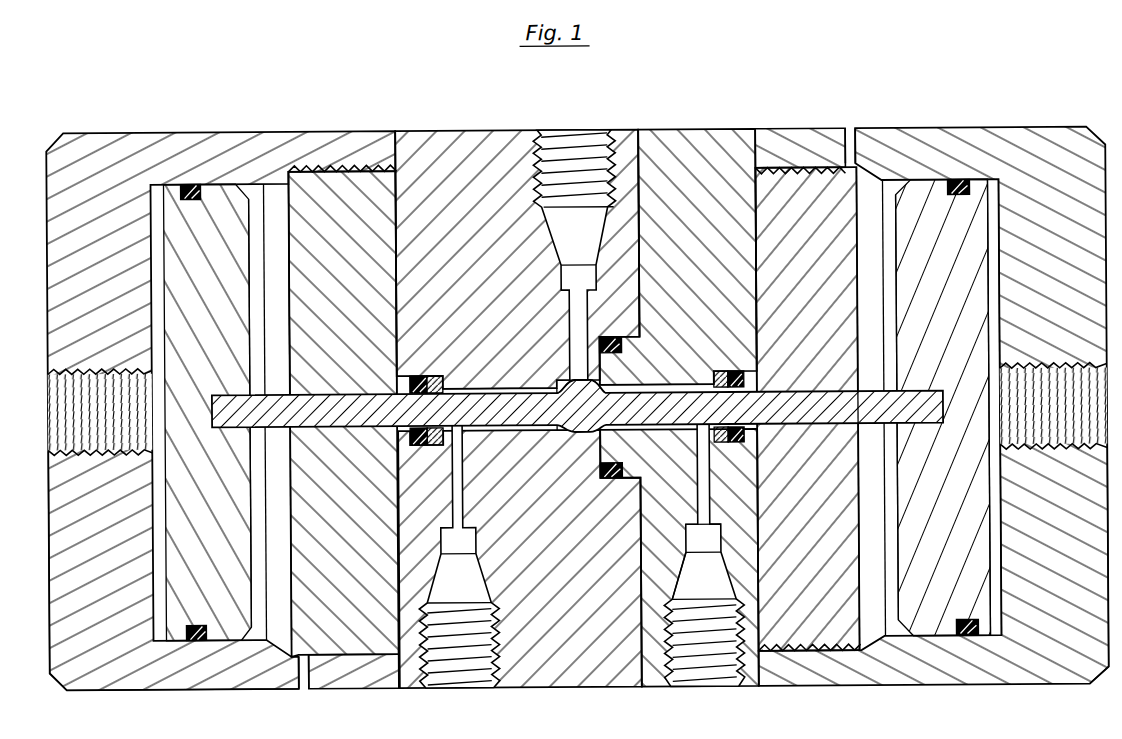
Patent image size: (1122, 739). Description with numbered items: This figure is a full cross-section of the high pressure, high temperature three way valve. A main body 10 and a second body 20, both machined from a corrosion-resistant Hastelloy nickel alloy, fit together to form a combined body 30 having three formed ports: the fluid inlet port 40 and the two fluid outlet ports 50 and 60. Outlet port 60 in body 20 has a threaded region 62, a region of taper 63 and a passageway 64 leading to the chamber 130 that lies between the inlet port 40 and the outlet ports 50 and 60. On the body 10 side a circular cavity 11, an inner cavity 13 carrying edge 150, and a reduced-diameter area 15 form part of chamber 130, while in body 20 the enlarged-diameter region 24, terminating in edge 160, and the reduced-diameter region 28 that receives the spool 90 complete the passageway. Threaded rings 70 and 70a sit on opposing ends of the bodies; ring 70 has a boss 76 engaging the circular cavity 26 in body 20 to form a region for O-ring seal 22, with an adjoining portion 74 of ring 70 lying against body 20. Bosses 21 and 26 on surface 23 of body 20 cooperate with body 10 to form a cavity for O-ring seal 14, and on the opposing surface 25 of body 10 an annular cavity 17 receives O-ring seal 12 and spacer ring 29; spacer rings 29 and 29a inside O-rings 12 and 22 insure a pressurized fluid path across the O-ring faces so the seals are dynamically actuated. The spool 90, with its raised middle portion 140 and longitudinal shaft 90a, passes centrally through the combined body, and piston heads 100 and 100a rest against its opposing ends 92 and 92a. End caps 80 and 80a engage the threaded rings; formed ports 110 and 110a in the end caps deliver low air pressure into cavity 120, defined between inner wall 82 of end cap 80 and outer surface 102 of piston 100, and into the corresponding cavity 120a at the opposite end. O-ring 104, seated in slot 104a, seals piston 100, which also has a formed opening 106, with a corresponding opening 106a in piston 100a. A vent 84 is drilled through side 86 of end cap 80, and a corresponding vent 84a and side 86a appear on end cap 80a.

The main body 10 is at (452, 140).
The circular cavity 11 is at (616, 480).
The O-ring seal 12 is at (418, 375).
The inner cavity 13 is at (575, 372).
The O-ring seal 14 is at (624, 346).
The reduced diameter area 15 is at (482, 386).
The annular cavity 17 is at (438, 376).
The second body 20 is at (682, 140).
The raised cylindrical boss 21 is at (602, 382).
The O-ring seal 22 is at (730, 372).
The surface of body 20 23 is at (642, 262).
The enlarged diameter region 24 is at (650, 362).
The opposing surface 25 is at (395, 275).
The circular cavity 26 is at (680, 362).
The reduced diameter region 28 is at (758, 440).
The spacer ring 29 is at (726, 445).
The spacer ring 29a is at (435, 445).
The combined body 30 is at (581, 233).
The fluid inlet port 40 is at (560, 200).
The fluid outlet port 50 is at (444, 648).
The fluid outlet port 60 is at (689, 648).
The threaded region 62 is at (768, 645).
The region of taper 63 is at (735, 565).
The passageway 64 is at (720, 520).
The threaded ring 70 is at (788, 310).
The threaded ring 70a is at (330, 517).
The block wall 74 is at (812, 390).
The boss 76 is at (765, 380).
The end cap 80 is at (1033, 310).
The end cap 80a is at (84, 323).
The inner wall 82 is at (1008, 270).
The vent 84 is at (858, 148).
The vent slot 84a is at (302, 688).
The side of end cap 86 is at (812, 130).
The threaded joint 86a is at (352, 130).
The spool 90 is at (842, 432).
The first longitudinal shaft 90a is at (302, 432).
The end of spool 92 is at (940, 390).
The end of spool 92a is at (252, 388).
The piston head 100 is at (930, 333).
The piston head 100a is at (228, 323).
The outer surface of piston head 102 is at (990, 288).
The O-ring 104 is at (960, 182).
The formed slot 104a is at (192, 182).
The formed opening 106 is at (925, 430).
The piston face 106a is at (248, 440).
The formed port 110 is at (1031, 422).
The formed port 110a is at (84, 422).
The formed cavity 120 is at (1000, 352).
The cap wall 120a is at (152, 508).
The chamber 130 is at (580, 436).
The raised middle portion 140 is at (564, 420).
The edge 150 is at (552, 384).
The edge 160 is at (606, 432).